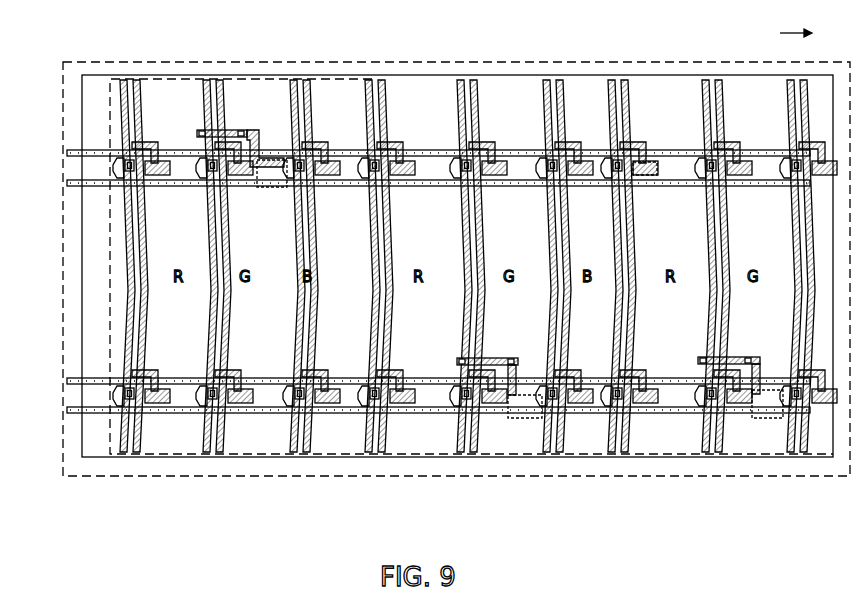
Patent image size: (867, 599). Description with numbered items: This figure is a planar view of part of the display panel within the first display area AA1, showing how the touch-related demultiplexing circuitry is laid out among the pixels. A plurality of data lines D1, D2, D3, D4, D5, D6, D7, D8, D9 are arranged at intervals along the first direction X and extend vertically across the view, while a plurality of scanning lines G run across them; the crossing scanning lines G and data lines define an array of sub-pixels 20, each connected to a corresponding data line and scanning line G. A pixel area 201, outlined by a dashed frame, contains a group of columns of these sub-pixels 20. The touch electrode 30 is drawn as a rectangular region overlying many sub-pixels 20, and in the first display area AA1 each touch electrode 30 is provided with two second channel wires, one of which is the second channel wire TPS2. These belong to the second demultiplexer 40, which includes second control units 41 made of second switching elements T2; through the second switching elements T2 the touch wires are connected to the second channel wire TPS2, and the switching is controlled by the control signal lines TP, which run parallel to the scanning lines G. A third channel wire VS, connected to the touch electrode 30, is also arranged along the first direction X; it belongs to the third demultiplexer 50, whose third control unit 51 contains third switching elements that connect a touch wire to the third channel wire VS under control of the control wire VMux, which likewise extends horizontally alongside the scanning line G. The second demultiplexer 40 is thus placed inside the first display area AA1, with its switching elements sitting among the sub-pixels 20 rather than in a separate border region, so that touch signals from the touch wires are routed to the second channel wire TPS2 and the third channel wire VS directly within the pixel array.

The first display area AA1 is at (104, 60).
The touch electrode 30 is at (438, 74).
The pixel area 201 is at (371, 75).
The sub-pixel 20 is at (337, 125).
The scanning line G is at (427, 267).
The control wire VMux is at (412, 183).
The control signal line TP is at (420, 413).
The data line D1 is at (135, 279).
The data line D2 is at (221, 288).
The data line D3 is at (309, 279).
The data line D4 is at (386, 279).
The data line D5 is at (473, 279).
The data line D6 is at (558, 279).
The data line D7 is at (629, 279).
The data line D8 is at (720, 279).
The data line D9 is at (808, 279).
The third control unit 51 is at (265, 150).
The third demultiplexer 50 is at (299, 32).
The third channel wire VS is at (296, 85).
The second switching element T2 is at (517, 425).
The second control unit 41 is at (762, 425).
The second channel wire TPS2 is at (800, 452).
The second demultiplexer 40 is at (789, 506).
The first direction X is at (803, 33).